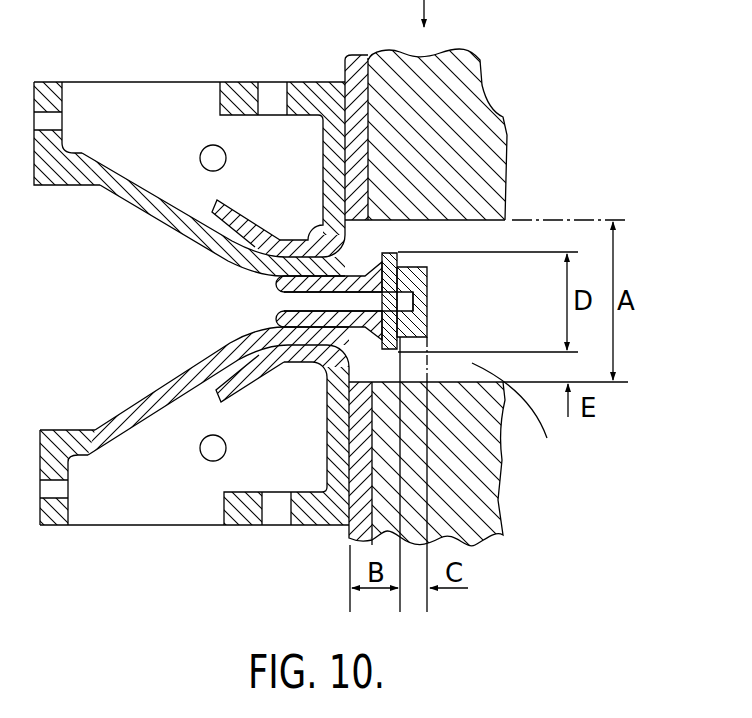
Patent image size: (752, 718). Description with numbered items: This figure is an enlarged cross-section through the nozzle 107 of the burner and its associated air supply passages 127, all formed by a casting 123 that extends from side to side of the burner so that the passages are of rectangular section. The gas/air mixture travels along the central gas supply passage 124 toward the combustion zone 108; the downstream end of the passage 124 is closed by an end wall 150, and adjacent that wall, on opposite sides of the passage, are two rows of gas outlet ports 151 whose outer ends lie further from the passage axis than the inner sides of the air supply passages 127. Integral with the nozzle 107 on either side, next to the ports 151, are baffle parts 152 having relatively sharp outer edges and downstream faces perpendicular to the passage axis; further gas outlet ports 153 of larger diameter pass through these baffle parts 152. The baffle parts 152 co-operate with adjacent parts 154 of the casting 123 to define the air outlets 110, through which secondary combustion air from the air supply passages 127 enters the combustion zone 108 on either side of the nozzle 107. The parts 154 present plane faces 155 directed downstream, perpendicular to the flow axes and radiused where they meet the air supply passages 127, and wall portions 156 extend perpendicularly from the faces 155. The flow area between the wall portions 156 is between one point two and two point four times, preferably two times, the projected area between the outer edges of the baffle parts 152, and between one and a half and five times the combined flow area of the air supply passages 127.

The nozzle 107 is at (429, 302).
The combustion zone 108 is at (527, 413).
The air outlet 110 is at (440, 205).
The casting 123 is at (127, 420).
The gas supply passage 124 is at (312, 298).
The air supply passage 127 is at (210, 238).
The end wall 150 is at (443, 301).
The gas outlet port 151 is at (403, 280).
The baffle part 152 is at (373, 276).
The gas outlet port 153 is at (398, 254).
The casting part 154 is at (292, 248).
The plane face 155 is at (340, 227).
The wall portion 156 is at (464, 212).